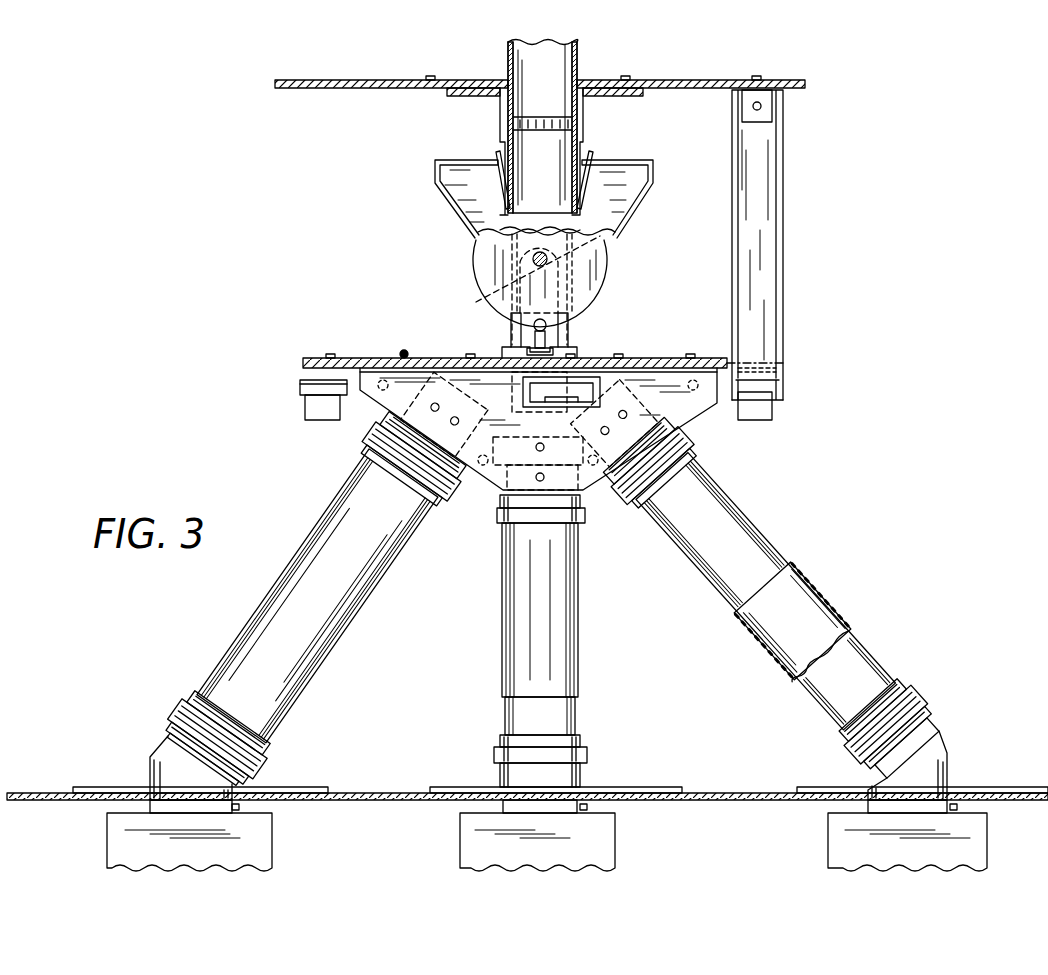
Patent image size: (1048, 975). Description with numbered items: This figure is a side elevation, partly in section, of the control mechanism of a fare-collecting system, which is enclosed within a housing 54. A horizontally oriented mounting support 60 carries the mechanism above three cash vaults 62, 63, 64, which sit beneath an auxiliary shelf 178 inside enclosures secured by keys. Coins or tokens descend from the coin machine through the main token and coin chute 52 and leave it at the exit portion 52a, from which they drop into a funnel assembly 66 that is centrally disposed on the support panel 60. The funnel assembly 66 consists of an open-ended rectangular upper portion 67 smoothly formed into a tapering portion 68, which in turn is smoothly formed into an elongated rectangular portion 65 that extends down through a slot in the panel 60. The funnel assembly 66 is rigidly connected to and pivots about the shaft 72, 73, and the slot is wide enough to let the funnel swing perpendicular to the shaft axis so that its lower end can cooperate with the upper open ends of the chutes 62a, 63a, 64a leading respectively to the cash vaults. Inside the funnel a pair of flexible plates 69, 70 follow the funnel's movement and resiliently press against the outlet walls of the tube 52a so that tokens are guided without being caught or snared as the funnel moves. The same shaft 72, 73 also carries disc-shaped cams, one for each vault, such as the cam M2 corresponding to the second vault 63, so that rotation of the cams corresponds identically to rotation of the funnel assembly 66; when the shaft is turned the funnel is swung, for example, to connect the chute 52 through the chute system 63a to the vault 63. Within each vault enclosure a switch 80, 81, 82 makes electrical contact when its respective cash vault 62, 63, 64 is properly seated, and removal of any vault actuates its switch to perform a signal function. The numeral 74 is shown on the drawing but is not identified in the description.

The token and coin chute 52 is at (574, 74).
The exit portion of the main chute 52a is at (504, 152).
The housing 54 is at (235, 274).
The mounting support 60 is at (378, 357).
The cash vault 62 is at (106, 838).
The chute 62a is at (386, 440).
The cash vault 63 is at (460, 838).
The chute system 63a is at (572, 492).
The cash vault 64 is at (828, 838).
The chute 64a is at (689, 434).
The elongated rectangular portion 65 is at (568, 337).
The funnel assembly 66 is at (434, 218).
The open-ended rectangular upper portion 67 is at (654, 172).
The tapering portion 68 is at (628, 226).
The flexible plate 69 is at (582, 186).
The flexible plate 70 is at (499, 176).
The shaft 72 is at (544, 273).
The shaft 73 is at (532, 262).
The arm 74 is at (483, 296).
The cam M2 is at (603, 284).
The switch 80 is at (239, 808).
The switch 81 is at (586, 808).
The switch 82 is at (954, 808).
The auxiliary shelf 178 is at (340, 796).